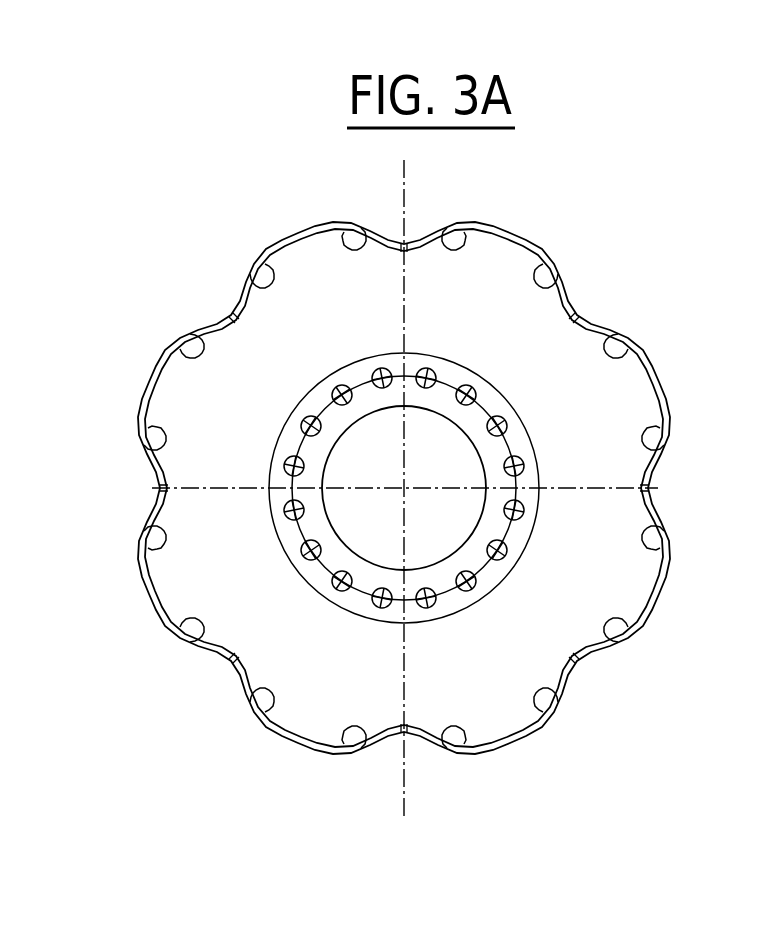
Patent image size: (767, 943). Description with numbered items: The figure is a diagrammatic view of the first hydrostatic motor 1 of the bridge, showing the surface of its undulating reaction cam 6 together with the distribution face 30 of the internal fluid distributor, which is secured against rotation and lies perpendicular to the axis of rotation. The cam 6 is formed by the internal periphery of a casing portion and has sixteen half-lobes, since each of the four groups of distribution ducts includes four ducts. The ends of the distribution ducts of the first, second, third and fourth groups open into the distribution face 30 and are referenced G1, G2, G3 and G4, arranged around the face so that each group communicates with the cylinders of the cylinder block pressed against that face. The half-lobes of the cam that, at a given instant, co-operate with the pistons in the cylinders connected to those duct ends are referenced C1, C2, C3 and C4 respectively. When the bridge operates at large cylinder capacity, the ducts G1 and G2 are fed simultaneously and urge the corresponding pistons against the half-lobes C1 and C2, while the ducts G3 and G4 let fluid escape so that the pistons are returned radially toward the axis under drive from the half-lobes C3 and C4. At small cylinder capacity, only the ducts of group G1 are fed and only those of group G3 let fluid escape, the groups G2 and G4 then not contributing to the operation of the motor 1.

The hydrostatic motor 1 is at (296, 806).
The undulating reaction cam 6 is at (510, 294).
The distribution face 30 is at (290, 430).
The cam half-lobes C1 is at (656, 540).
The cam half-lobes C2 is at (548, 700).
The cam half-lobes C3 is at (458, 745).
The cam half-lobes C4 is at (618, 636).
The first group of distribution ducts G1 is at (524, 512).
The second group of distribution ducts G2 is at (472, 590).
The third group of distribution ducts G3 is at (428, 608).
The fourth group of distribution ducts G4 is at (505, 556).